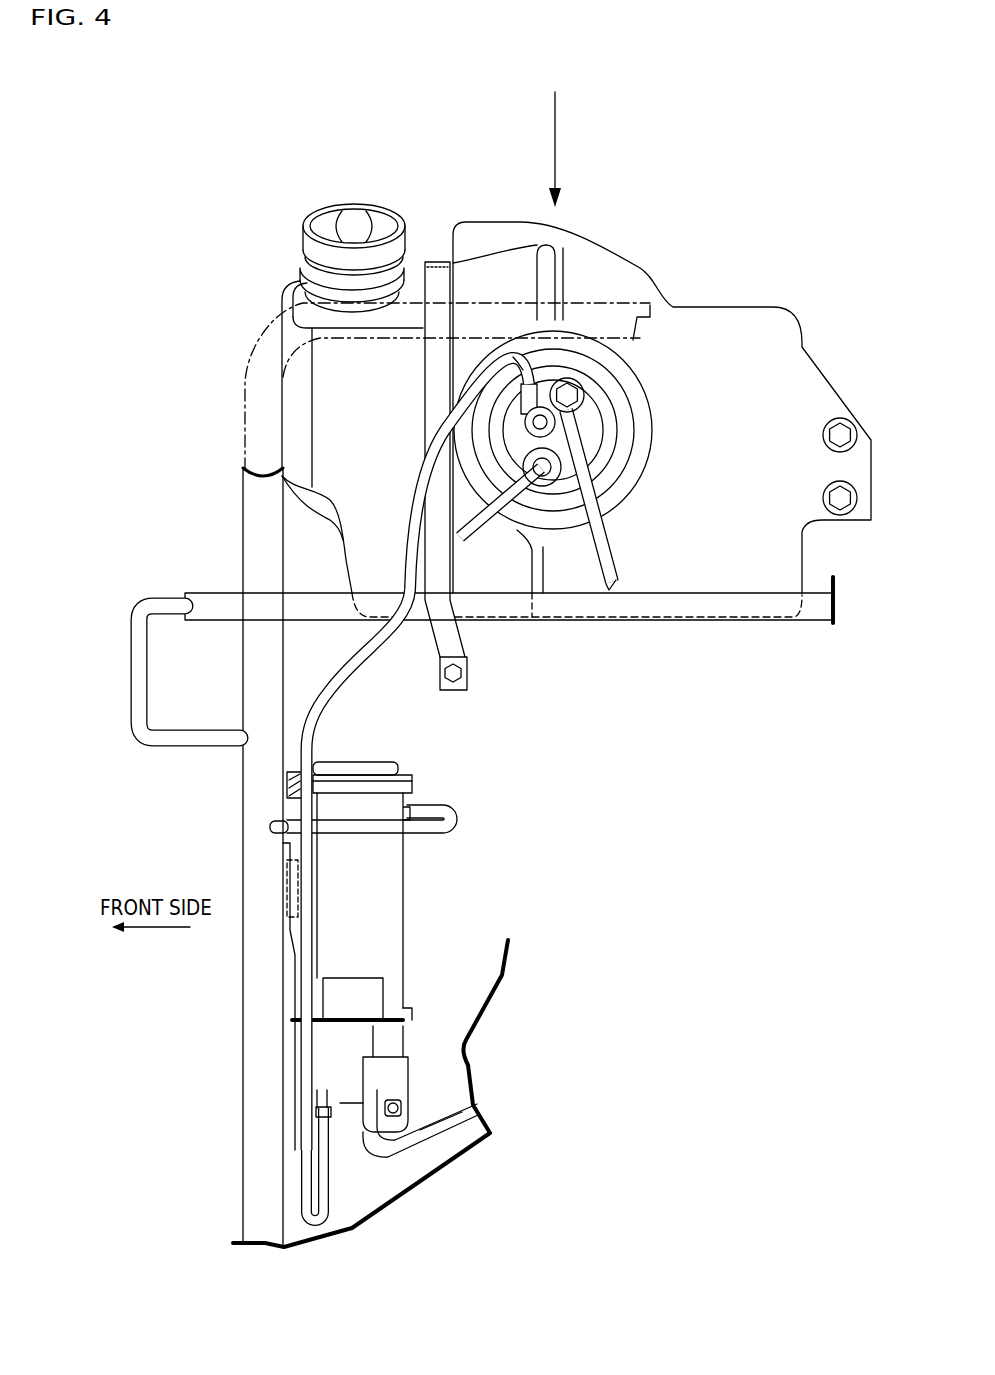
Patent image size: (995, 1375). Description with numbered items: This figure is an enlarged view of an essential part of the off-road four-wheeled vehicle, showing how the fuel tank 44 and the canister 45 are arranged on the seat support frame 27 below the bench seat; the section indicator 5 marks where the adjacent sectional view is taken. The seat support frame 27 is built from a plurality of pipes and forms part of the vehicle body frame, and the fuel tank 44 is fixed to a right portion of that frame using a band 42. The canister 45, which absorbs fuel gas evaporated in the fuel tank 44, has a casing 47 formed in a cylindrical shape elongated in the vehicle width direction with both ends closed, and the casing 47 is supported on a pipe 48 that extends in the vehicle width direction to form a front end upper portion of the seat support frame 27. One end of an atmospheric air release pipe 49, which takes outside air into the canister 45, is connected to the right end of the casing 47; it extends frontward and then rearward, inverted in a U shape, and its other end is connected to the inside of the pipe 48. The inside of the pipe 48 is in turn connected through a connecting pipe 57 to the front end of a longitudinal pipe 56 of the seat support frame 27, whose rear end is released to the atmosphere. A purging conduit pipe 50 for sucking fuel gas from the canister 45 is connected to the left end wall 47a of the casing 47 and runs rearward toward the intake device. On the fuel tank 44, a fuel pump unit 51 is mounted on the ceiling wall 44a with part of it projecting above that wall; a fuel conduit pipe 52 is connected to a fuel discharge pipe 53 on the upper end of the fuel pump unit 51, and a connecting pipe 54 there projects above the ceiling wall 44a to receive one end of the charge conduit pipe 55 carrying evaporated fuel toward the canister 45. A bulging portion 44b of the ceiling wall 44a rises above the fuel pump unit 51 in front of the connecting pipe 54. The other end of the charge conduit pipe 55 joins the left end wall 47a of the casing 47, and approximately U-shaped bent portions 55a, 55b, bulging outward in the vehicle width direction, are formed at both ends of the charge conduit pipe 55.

The section line indicator 5 is at (555, 124).
The seat support frame 27 is at (236, 1108).
The band 42 is at (437, 365).
The fuel tank 44 is at (753, 481).
The ceiling wall 44a is at (578, 580).
The bulging portion 44b is at (325, 448).
The canister 45 is at (410, 952).
The casing 47 is at (387, 963).
The left end wall 47a is at (347, 1107).
The pipe 48 is at (258, 505).
The atmospheric air release pipe 49 is at (375, 828).
The purging conduit pipe 50 is at (437, 1137).
The fuel pump unit 51 is at (610, 428).
The fuel conduit pipe 52 is at (603, 565).
The fuel discharge pipe 53 is at (537, 397).
The connecting pipe 54 is at (572, 380).
The charge conduit pipe 55 is at (357, 683).
The U-shaped bent portion 55a is at (513, 357).
The U-shaped bent portion 55b is at (328, 1197).
The pipe 56 is at (637, 612).
The connecting pipe 57 is at (203, 745).